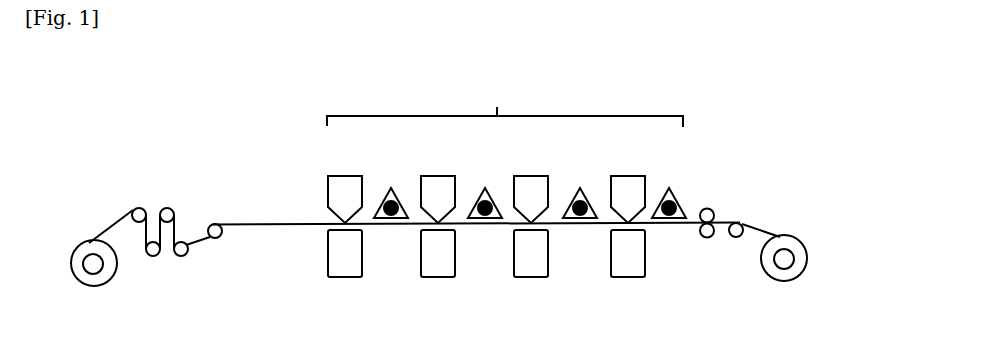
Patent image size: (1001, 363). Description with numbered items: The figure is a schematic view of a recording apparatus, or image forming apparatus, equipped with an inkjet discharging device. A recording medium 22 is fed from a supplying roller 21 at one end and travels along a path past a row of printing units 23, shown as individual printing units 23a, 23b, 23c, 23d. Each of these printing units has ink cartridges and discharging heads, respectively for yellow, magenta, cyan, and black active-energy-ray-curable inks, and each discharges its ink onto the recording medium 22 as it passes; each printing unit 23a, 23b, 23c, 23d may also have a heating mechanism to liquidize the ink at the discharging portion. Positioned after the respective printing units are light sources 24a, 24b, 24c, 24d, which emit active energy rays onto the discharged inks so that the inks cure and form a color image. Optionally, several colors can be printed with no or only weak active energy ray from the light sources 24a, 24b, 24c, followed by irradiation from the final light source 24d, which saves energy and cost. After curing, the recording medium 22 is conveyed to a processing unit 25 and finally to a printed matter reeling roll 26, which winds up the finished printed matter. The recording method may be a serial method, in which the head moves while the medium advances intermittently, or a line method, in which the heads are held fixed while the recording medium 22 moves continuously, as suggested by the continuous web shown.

The supplying roller 21 is at (93, 268).
The recording medium 22 is at (257, 222).
The printing units 23 is at (505, 104).
The printing unit 23a is at (345, 182).
The printing unit 23b is at (437, 182).
The printing unit 23c is at (530, 182).
The printing unit 23d is at (629, 182).
The light source 24a is at (393, 190).
The light source 24b is at (488, 190).
The light source 24c is at (582, 190).
The light source 24d is at (672, 190).
The processing unit 25 is at (712, 197).
The printed matter reeling roll 26 is at (781, 263).